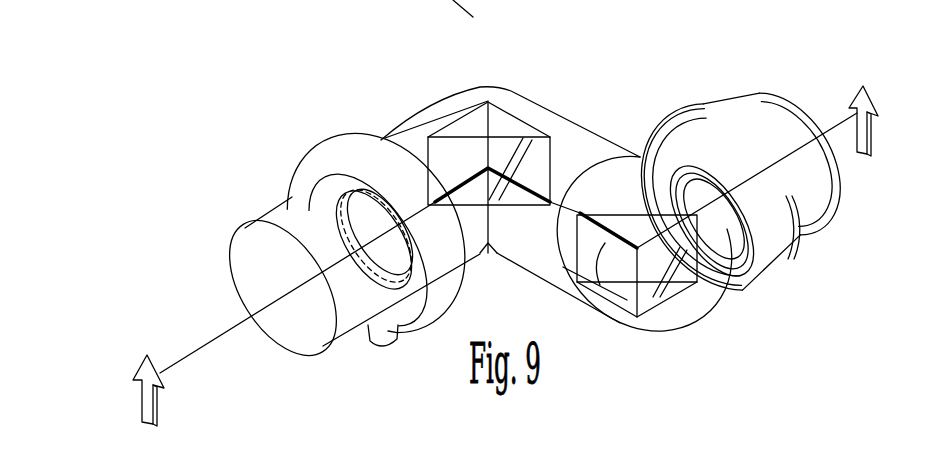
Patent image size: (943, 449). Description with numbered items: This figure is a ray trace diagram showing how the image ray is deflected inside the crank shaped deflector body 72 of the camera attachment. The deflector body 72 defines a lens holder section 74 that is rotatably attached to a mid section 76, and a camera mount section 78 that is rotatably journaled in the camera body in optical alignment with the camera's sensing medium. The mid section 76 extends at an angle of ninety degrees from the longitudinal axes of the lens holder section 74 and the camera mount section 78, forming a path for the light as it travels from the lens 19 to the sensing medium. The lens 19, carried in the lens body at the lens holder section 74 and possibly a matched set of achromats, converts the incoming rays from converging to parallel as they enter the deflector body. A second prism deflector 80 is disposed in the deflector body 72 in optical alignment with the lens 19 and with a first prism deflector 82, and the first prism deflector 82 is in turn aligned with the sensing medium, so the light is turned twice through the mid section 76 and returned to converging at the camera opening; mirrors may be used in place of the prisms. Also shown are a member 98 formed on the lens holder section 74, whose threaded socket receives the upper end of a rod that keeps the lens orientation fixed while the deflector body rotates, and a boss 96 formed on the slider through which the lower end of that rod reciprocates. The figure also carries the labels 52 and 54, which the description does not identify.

The deflector body 72 is at (480, 80).
The lens holder section 74 is at (287, 208).
The mid section 76 is at (562, 130).
The camera mount section 78 is at (713, 135).
The second prism deflector 80 is at (475, 123).
The first prism deflector 82 is at (655, 298).
The lens 19 is at (383, 213).
The boss 96 is at (483, 19).
The member 98 is at (383, 345).
The mounting portion 54 is at (320, 7).
The support portion 52 is at (574, 8).